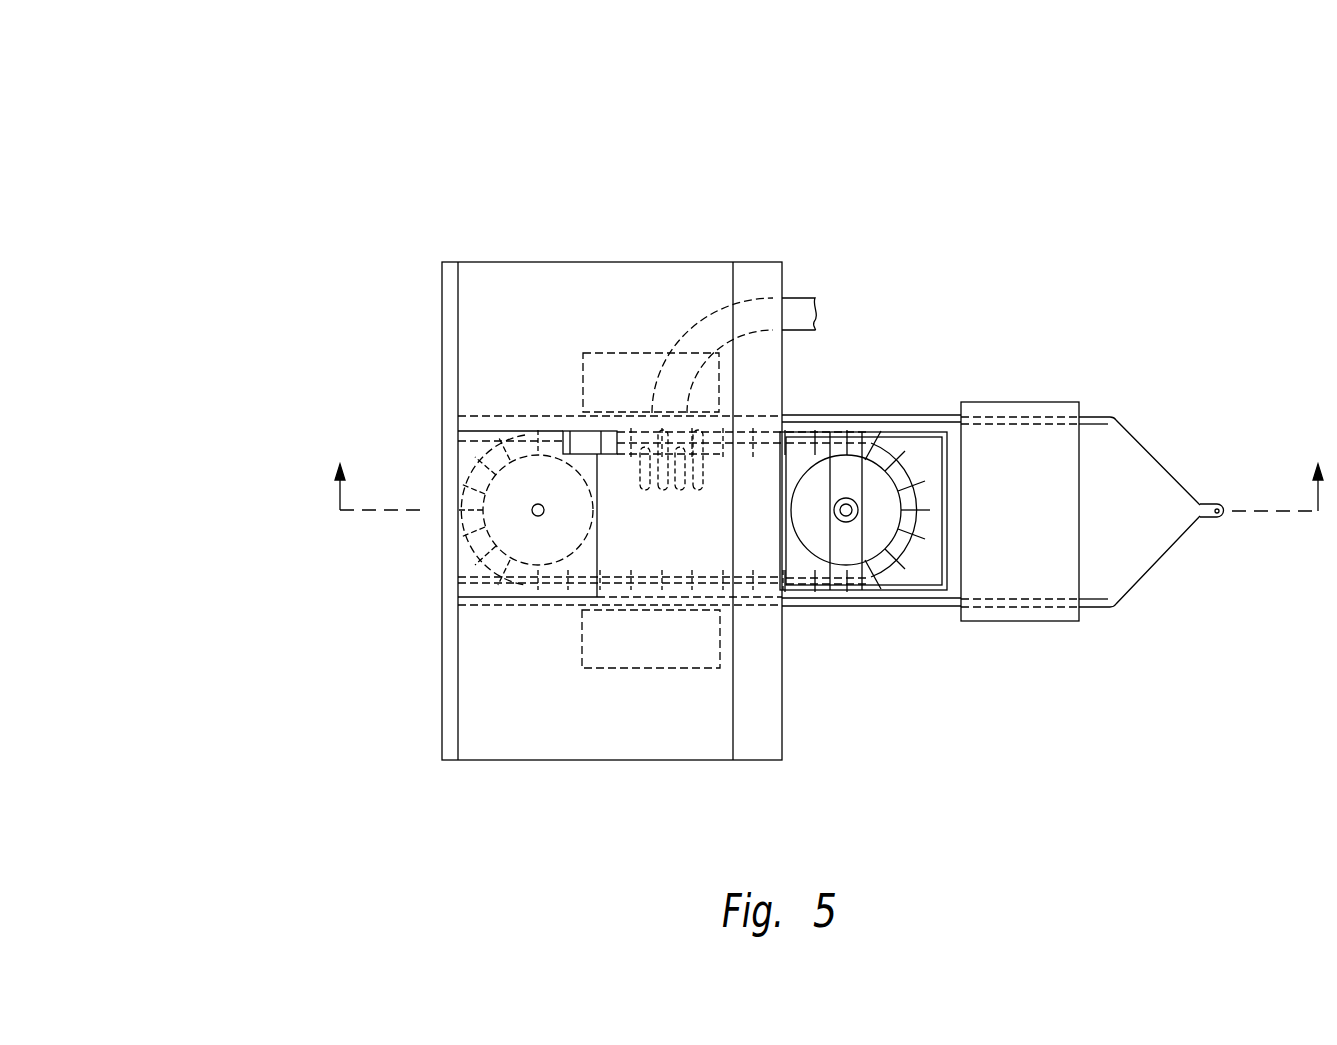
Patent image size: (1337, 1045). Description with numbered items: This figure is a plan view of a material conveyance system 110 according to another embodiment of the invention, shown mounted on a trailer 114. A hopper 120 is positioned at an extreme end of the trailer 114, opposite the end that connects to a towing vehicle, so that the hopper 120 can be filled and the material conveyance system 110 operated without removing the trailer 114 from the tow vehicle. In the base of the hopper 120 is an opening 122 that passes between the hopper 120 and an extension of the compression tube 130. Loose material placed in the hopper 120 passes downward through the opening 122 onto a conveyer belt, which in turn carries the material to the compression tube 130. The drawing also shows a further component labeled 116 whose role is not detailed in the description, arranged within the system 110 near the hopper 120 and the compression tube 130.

The material conveyance system 110 is at (362, 138).
The trailer 114 is at (1100, 417).
The engine 116 is at (640, 353).
The hopper 120 is at (442, 318).
The opening 122 is at (563, 430).
The compression tube 130 is at (718, 460).